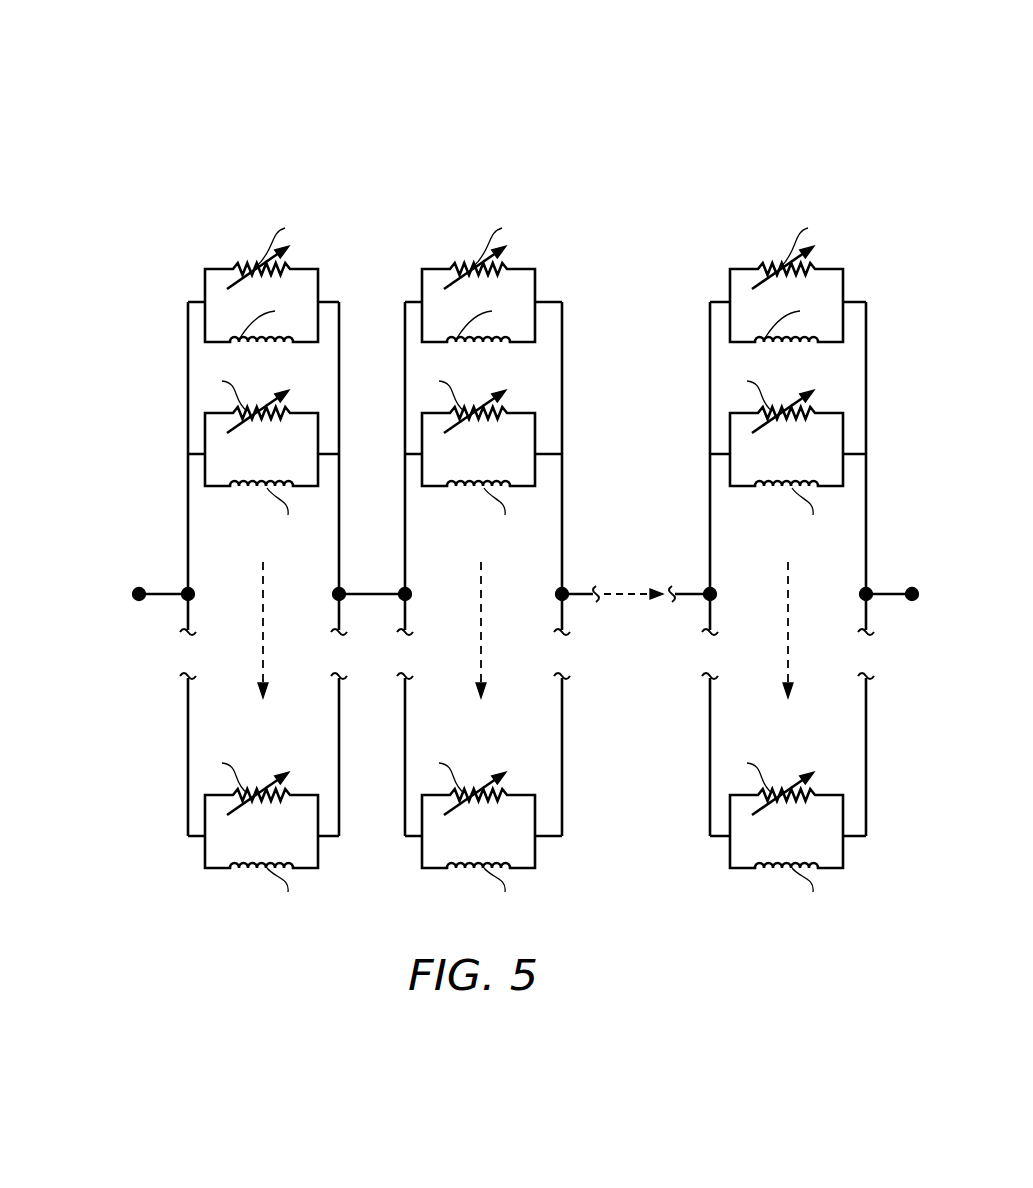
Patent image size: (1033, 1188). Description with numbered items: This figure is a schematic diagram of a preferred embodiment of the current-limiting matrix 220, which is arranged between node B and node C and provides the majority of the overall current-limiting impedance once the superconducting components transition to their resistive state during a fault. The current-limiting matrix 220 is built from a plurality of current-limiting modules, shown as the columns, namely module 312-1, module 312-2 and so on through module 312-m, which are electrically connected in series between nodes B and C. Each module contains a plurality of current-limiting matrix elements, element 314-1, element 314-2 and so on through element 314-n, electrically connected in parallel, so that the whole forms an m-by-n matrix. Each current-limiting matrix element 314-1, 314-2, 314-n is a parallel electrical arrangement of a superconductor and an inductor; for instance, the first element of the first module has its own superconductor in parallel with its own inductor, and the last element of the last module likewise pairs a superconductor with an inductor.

The current-limiting matrix 220 is at (277, 73).
The current-limiting module 312-1 is at (344, 203).
The current-limiting module 312-2 is at (562, 203).
The current-limiting module 312-m is at (870, 203).
The current-limiting matrix element 314-1 is at (453, 300).
The current-limiting matrix element 314-2 is at (453, 463).
The current-limiting matrix element 314-n is at (453, 844).